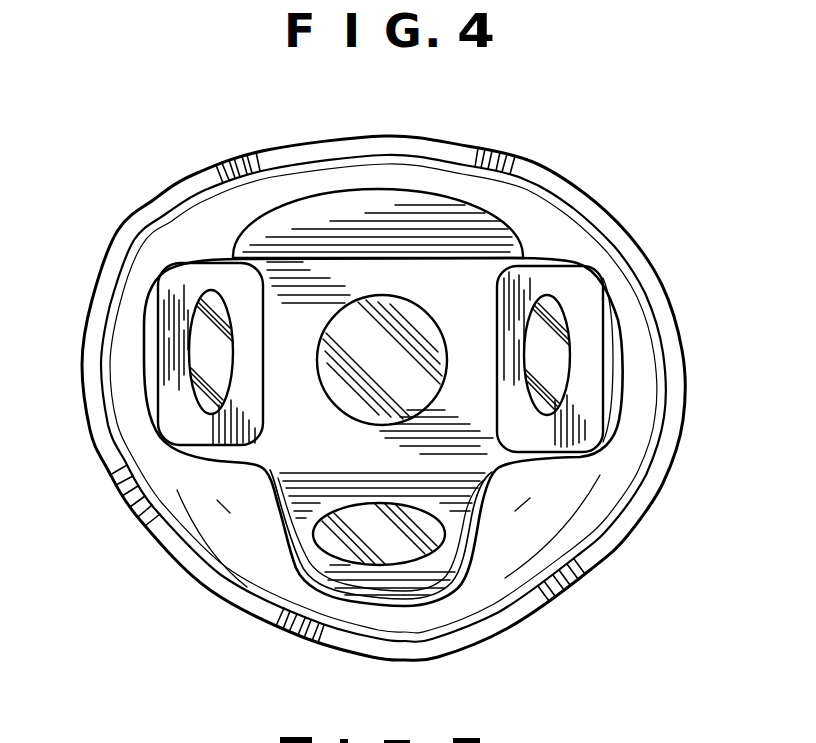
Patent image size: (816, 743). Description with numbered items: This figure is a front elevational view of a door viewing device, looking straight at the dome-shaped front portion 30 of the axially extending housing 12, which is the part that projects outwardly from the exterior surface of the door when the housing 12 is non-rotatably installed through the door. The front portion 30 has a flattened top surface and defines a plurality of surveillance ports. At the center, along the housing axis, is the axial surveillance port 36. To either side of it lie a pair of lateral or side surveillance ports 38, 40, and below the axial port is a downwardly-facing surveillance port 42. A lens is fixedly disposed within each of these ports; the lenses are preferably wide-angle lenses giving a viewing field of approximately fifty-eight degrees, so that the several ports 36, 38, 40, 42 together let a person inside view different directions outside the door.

The housing 12 is at (597, 194).
The front portion 30 is at (633, 317).
The axial surveillance port 36 is at (460, 298).
The lateral surveillance port 38 is at (190, 388).
The lateral surveillance port 40 is at (570, 370).
The downwardly-facing surveillance port 42 is at (318, 556).